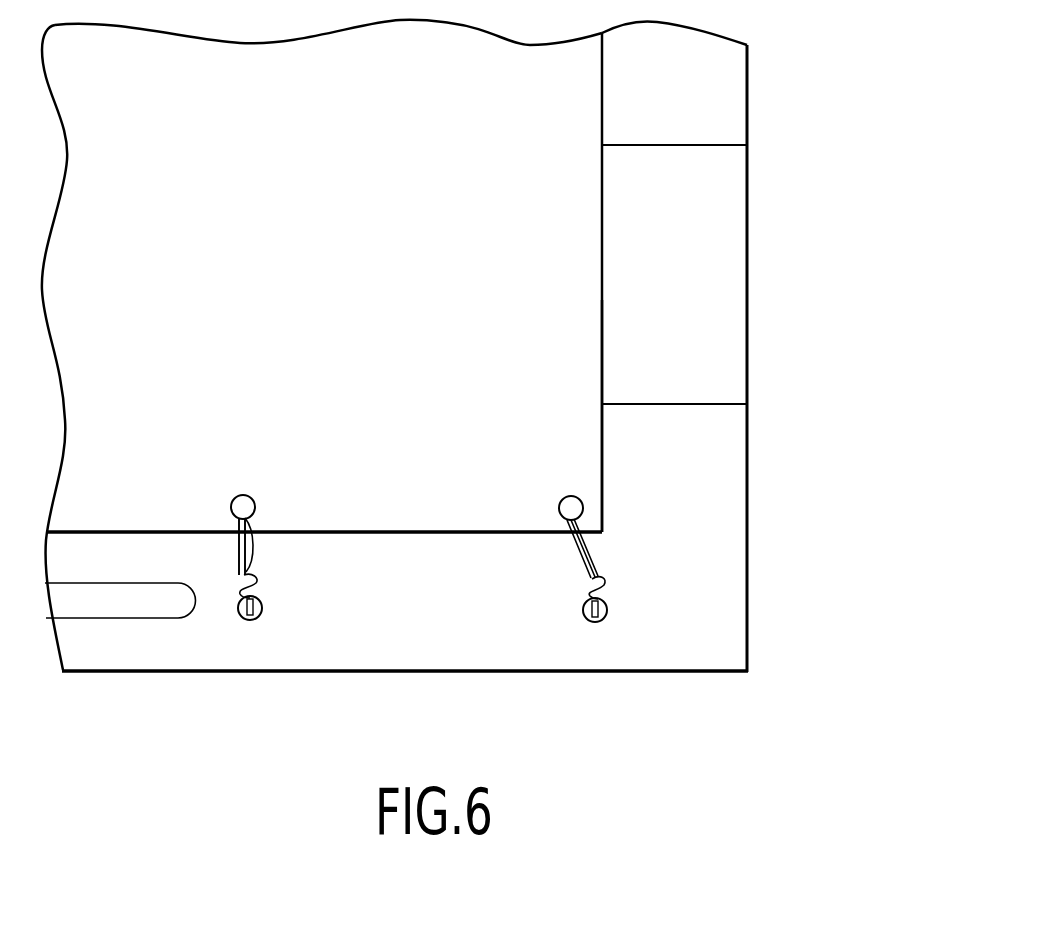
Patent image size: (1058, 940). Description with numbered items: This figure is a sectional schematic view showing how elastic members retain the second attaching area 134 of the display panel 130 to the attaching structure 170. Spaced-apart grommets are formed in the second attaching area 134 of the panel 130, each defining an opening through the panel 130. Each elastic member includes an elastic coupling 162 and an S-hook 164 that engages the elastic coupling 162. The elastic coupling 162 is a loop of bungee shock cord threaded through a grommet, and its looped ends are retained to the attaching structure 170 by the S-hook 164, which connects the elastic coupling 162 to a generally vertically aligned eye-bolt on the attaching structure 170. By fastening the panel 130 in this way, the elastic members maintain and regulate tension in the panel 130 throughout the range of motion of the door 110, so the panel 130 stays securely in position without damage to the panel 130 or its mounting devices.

The door 110 is at (752, 72).
The display panel 130 is at (446, 153).
The second attaching area 134 is at (400, 500).
The elastic coupling 162 is at (235, 525).
The S-hook 164 is at (240, 582).
The attaching structure 170 is at (562, 620).